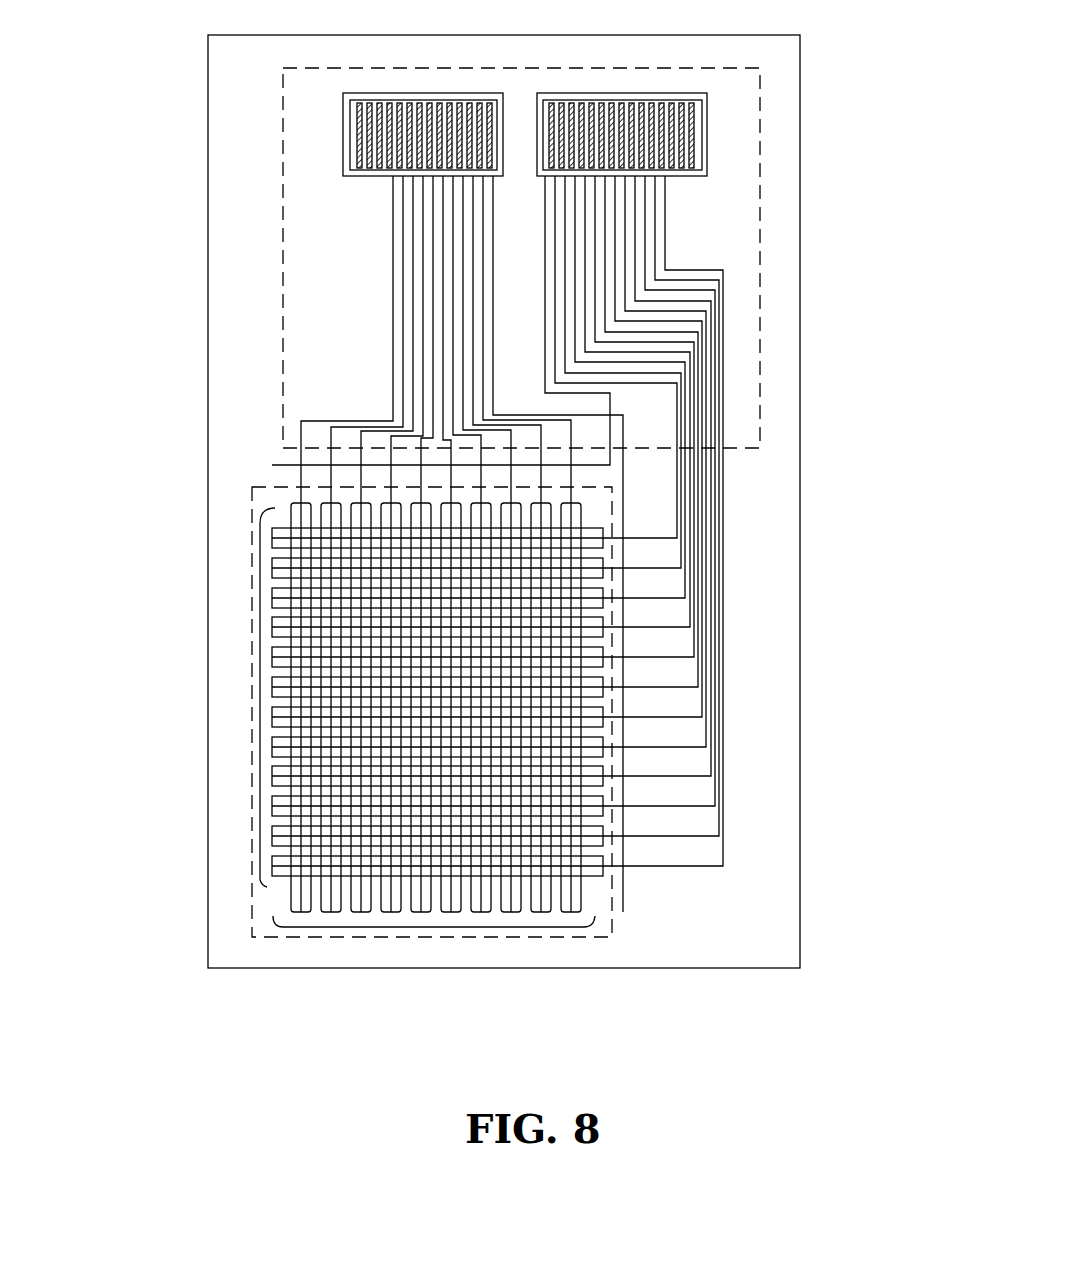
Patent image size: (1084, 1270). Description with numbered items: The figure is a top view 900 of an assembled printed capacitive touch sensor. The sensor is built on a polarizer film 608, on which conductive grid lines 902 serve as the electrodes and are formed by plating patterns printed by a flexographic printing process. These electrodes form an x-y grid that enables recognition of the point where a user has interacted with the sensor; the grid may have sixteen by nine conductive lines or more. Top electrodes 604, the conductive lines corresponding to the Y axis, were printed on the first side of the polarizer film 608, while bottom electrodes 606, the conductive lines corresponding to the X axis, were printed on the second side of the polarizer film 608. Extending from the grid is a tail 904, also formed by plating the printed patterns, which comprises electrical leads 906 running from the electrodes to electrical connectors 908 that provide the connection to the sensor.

The top view 900 is at (494, 503).
The electrical connectors 908 is at (343, 135).
The electrical leads 906 is at (390, 245).
The tail 904 is at (760, 448).
The polarizer film 608 is at (237, 426).
The bottom electrodes 606 is at (253, 697).
The top electrodes 604 is at (425, 937).
The conductive grid lines 902 is at (605, 925).